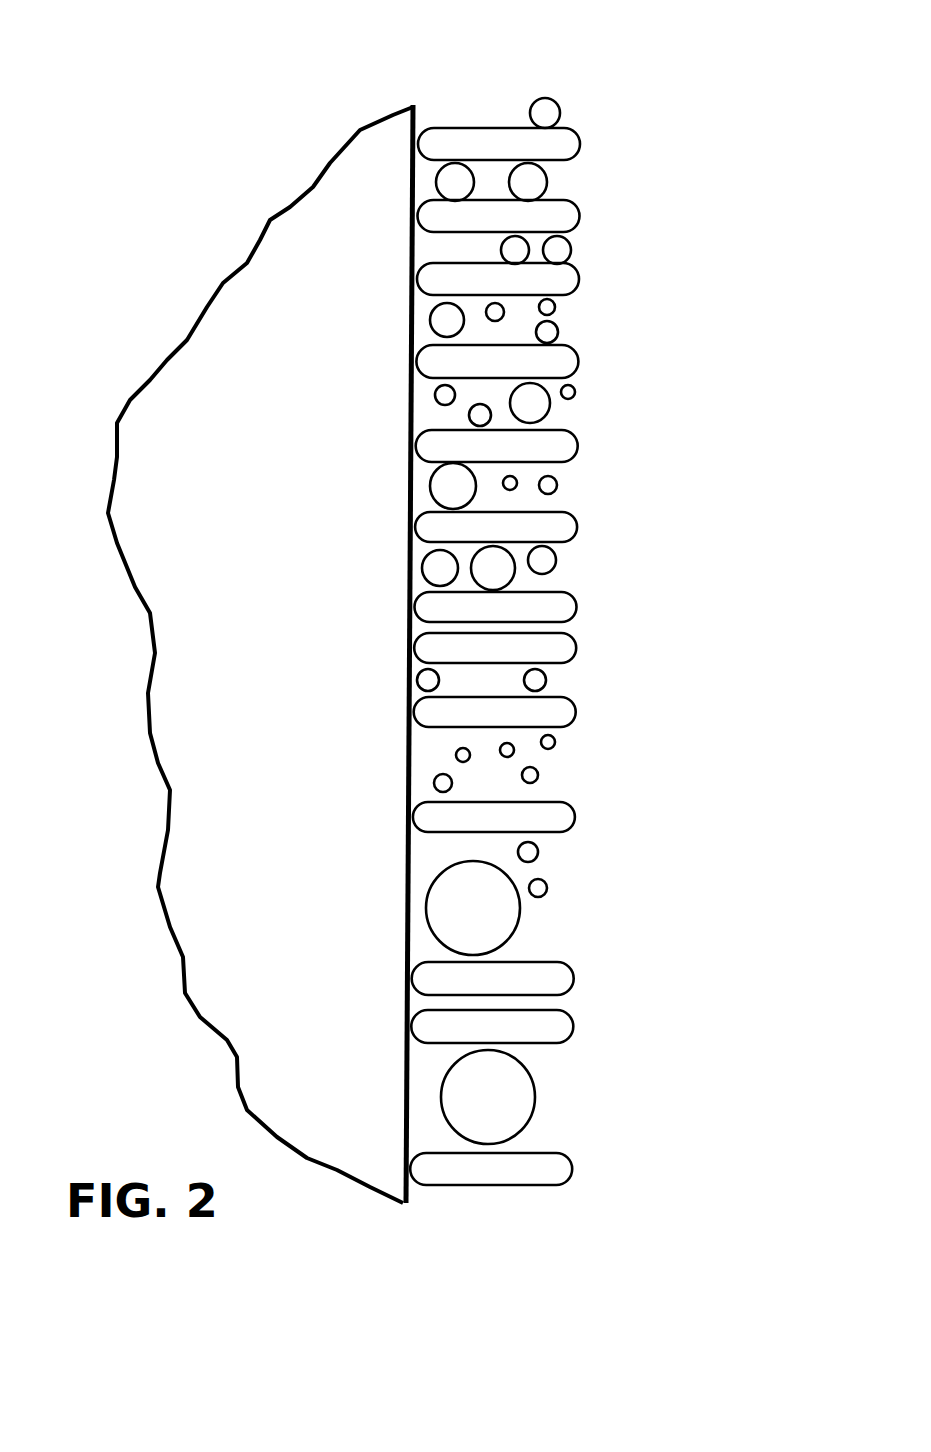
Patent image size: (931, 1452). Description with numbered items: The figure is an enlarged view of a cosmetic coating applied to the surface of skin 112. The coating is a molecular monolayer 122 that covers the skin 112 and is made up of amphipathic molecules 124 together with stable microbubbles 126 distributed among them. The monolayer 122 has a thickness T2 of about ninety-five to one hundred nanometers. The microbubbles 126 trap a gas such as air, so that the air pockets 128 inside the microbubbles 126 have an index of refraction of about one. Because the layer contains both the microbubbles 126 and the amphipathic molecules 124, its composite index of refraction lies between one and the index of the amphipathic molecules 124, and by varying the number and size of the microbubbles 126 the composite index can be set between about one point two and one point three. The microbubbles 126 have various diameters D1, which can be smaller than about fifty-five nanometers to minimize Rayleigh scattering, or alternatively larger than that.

The skin 112 is at (326, 589).
The molecular monolayer 122 is at (587, 78).
The amphipathic molecules 124 is at (563, 280).
The microbubbles 126 is at (549, 406).
The air pockets 128 is at (555, 562).
The diameter D1 is at (453, 947).
The thickness T2 is at (568, 1258).